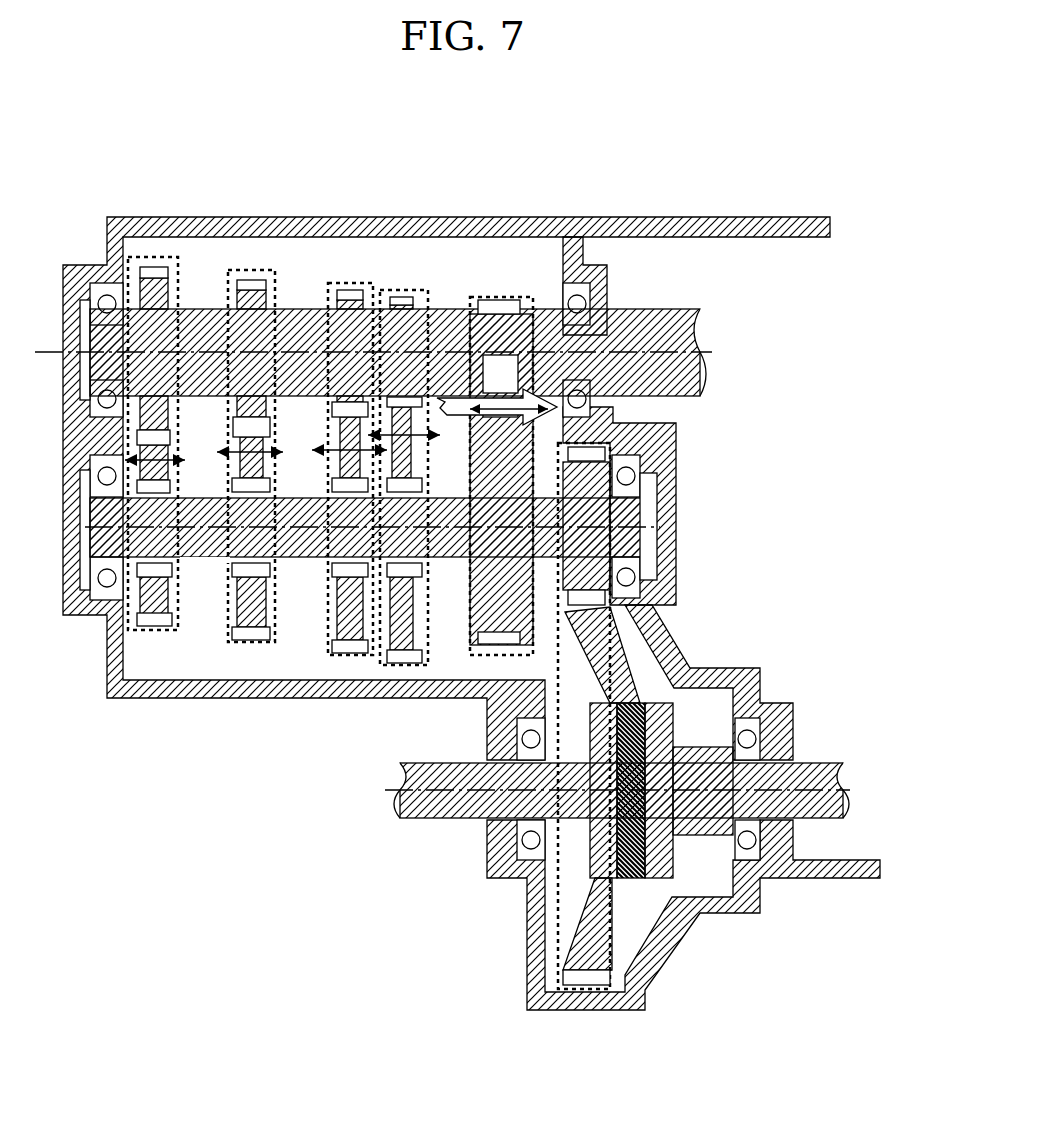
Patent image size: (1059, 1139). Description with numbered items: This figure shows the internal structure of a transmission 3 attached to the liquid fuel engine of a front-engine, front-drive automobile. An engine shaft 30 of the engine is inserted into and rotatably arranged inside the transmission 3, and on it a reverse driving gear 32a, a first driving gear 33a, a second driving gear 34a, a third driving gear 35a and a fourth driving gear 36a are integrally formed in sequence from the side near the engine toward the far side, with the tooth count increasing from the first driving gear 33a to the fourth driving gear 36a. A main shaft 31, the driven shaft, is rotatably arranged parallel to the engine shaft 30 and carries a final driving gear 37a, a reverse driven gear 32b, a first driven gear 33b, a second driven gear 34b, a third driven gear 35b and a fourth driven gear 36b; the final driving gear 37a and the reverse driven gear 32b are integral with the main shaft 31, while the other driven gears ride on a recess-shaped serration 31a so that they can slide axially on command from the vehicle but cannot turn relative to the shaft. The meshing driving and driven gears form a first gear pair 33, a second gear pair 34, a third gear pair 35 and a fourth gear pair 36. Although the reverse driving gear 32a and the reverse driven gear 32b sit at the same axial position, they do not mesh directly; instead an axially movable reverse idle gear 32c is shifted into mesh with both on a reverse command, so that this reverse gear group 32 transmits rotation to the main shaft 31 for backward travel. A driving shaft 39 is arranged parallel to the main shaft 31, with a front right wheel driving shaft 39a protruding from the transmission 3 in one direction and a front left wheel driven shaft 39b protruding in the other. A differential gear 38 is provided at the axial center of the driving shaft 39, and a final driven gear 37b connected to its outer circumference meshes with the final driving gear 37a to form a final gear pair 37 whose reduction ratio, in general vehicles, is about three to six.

The transmission 3 is at (714, 124).
The engine shaft 30 is at (690, 340).
The main shaft 31 is at (650, 520).
The serration 31a is at (207, 567).
The reverse gear group 32 is at (530, 300).
The reverse driving gear 32a is at (495, 302).
The reverse driven gear 32b is at (503, 640).
The reverse idle gear 32c is at (517, 365).
The first gear pair 33 is at (432, 292).
The first driving gear 33a is at (418, 297).
The first driven gear 33b is at (412, 660).
The second gear pair 34 is at (363, 298).
The second driving gear 34a is at (345, 295).
The second driven gear 34b is at (352, 645).
The third gear pair 35 is at (262, 290).
The third driving gear 35a is at (248, 285).
The third driven gear 35b is at (267, 643).
The fourth gear pair 36 is at (182, 272).
The fourth driving gear 36a is at (142, 270).
The fourth driven gear 36b is at (160, 617).
The final gear pair 37 is at (612, 630).
The final driving gear 37a is at (590, 455).
The final driven gear 37b is at (570, 975).
The differential gear 38 is at (706, 668).
The driving shaft 39 is at (250, 830).
The front right wheel driving shaft 39a is at (697, 820).
The front left wheel driven shaft 39b is at (457, 818).